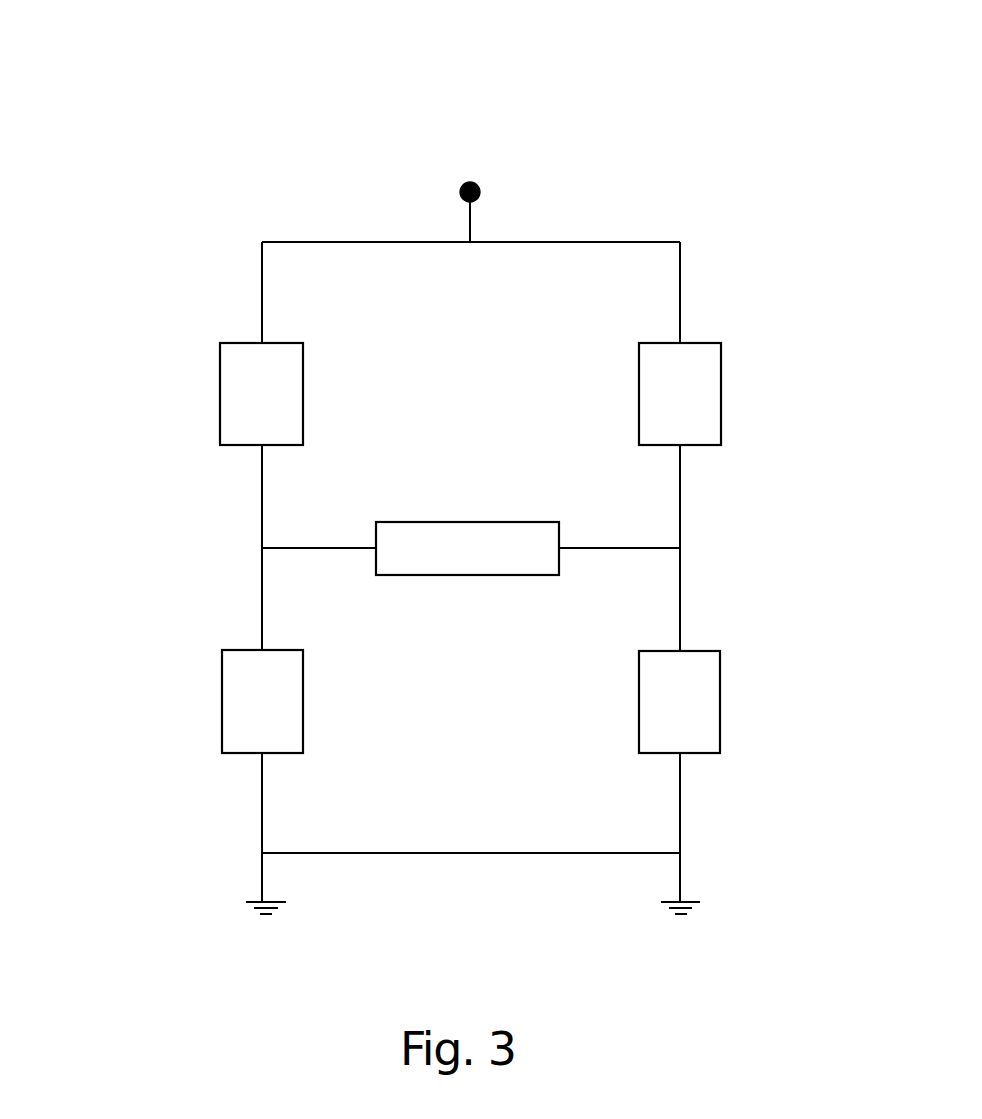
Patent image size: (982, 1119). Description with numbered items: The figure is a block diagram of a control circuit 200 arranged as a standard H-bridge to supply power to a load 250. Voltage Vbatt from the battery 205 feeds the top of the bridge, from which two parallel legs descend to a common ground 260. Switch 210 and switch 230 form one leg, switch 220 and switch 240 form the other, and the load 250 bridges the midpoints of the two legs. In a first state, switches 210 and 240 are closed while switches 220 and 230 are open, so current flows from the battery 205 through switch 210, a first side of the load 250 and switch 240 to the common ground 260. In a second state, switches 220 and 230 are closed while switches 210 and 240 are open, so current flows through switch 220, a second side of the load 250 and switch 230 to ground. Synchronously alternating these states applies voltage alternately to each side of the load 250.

The control circuit 200 is at (692, 195).
The battery 205 is at (480, 192).
The switch 210 is at (220, 418).
The switch 220 is at (721, 408).
The switch 230 is at (222, 735).
The switch 240 is at (720, 726).
The load 250 is at (455, 522).
The common ground 260 is at (258, 902).